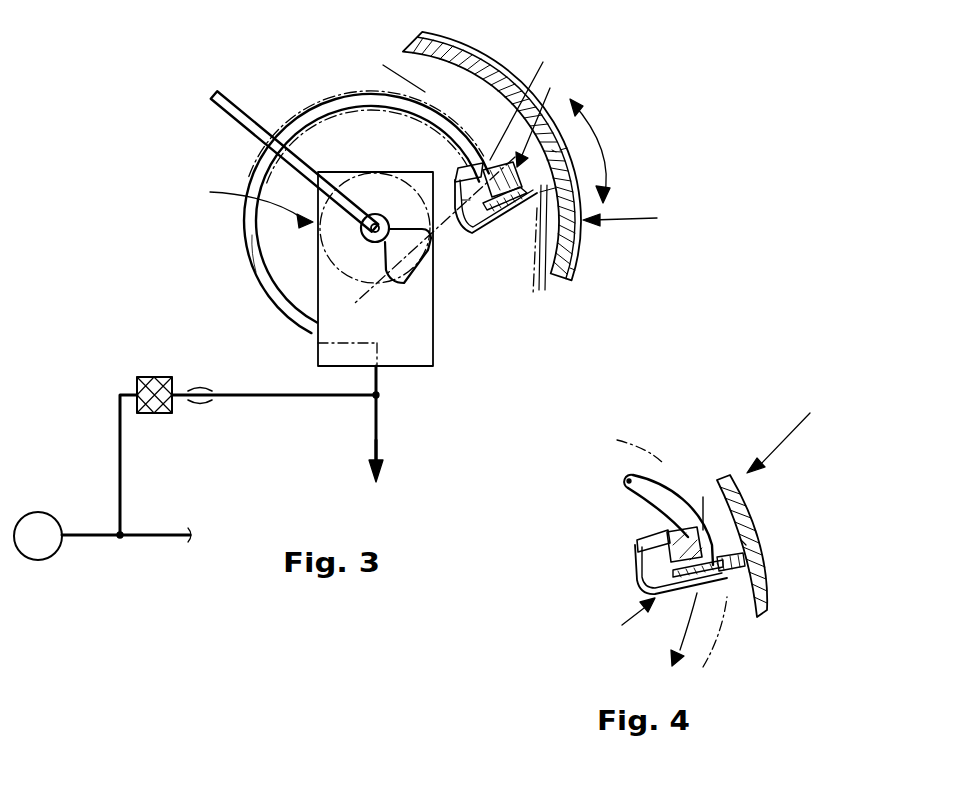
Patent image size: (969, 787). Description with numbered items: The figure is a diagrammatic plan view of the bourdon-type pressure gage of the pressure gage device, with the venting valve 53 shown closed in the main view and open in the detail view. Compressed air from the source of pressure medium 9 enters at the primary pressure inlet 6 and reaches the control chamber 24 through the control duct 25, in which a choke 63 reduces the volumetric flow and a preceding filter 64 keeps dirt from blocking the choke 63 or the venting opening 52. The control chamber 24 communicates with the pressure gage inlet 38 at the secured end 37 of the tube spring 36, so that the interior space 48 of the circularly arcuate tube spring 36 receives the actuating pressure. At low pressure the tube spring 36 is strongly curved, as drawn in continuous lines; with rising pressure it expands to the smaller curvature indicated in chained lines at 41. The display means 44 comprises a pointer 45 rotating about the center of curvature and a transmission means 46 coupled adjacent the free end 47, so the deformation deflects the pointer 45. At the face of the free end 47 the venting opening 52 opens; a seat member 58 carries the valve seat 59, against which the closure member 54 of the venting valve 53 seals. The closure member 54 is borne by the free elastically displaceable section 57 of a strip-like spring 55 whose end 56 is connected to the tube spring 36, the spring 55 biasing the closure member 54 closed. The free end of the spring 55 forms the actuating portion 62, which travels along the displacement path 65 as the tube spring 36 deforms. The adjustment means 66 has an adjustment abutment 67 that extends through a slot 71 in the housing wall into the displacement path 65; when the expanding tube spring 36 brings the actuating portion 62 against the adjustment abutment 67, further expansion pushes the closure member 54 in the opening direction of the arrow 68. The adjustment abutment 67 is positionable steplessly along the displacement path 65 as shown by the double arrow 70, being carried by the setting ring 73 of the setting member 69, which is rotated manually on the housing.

In FIG. 3, the primary pressure inlet 6 is at (168, 540).
In FIG. 3, the source of pressure medium 9 is at (45, 558).
In FIG. 3, the control chamber 24 is at (382, 446).
In FIG. 3, the control duct 25 is at (122, 468).
In FIG. 3, the tube spring 36 is at (243, 230).
In FIG. 4, the tube spring 36 is at (640, 495).
In FIG. 3, the secured end 37 is at (309, 345).
In FIG. 3, the pressure gage inlet 38 is at (378, 368).
In FIG. 3, the deformed configuration of smaller curvature 41 is at (383, 65).
In FIG. 3, the display means 44 is at (246, 205).
In FIG. 3, the pointer 45 is at (246, 106).
In FIG. 3, the transmission means 46 is at (392, 290).
In FIG. 3, the free end 47 is at (524, 97).
In FIG. 3, the interior space 48 is at (249, 270).
In FIG. 3, the venting opening 52 is at (480, 240).
In FIG. 4, the venting opening 52 is at (667, 560).
In FIG. 3, the venting valve 53 is at (567, 322).
In FIG. 4, the venting valve 53 is at (624, 635).
In FIG. 3, the closure member 54 is at (528, 240).
In FIG. 4, the closure member 54 is at (642, 585).
In FIG. 3, the spring 55 is at (470, 240).
In FIG. 3, the end of spring 56 is at (455, 185).
In FIG. 3, the free elastically displaceable section 57 is at (500, 240).
In FIG. 3, the seat member 58 is at (574, 100).
In FIG. 4, the valve seat 59 is at (703, 500).
In FIG. 3, the actuating portion 62 is at (553, 188).
In FIG. 4, the actuating portion 62 is at (737, 580).
In FIG. 3, the choke 63 is at (200, 385).
In FIG. 3, the filter 64 is at (150, 377).
In FIG. 3, the displacement path 65 is at (585, 212).
In FIG. 4, the displacement path 65 is at (720, 647).
In FIG. 3, the adjustment means 66 is at (632, 217).
In FIG. 4, the adjustment means 66 is at (790, 437).
In FIG. 3, the adjustment abutment 67 is at (567, 142).
In FIG. 4, the adjustment abutment 67 is at (750, 530).
In FIG. 4, the arrow indicating opening direction 68 is at (662, 638).
In FIG. 3, the setting member 69 is at (478, 52).
In FIG. 3, the double arrow 70 is at (567, 145).
In FIG. 3, the slot 71 is at (553, 226).
In FIG. 3, the setting ring 73 is at (572, 270).
In FIG. 4, the setting ring 73 is at (762, 570).